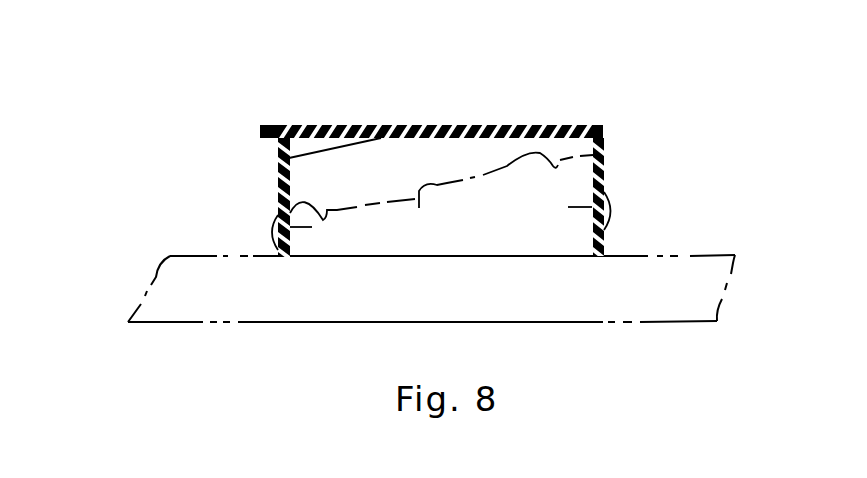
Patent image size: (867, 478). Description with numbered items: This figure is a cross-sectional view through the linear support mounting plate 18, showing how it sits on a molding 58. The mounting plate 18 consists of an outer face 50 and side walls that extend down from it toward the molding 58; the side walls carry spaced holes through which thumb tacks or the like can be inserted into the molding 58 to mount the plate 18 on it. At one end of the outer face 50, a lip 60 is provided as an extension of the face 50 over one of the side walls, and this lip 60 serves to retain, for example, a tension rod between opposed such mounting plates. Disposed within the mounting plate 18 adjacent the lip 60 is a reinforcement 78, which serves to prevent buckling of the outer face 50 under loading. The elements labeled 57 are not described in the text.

The linear support mounting plate 18 is at (397, 156).
The outer face 50 is at (362, 125).
The lip 60 is at (260, 130).
The reinforcement 78 is at (305, 143).
The molding 58 is at (542, 197).
The retaining clips 57 is at (272, 225).